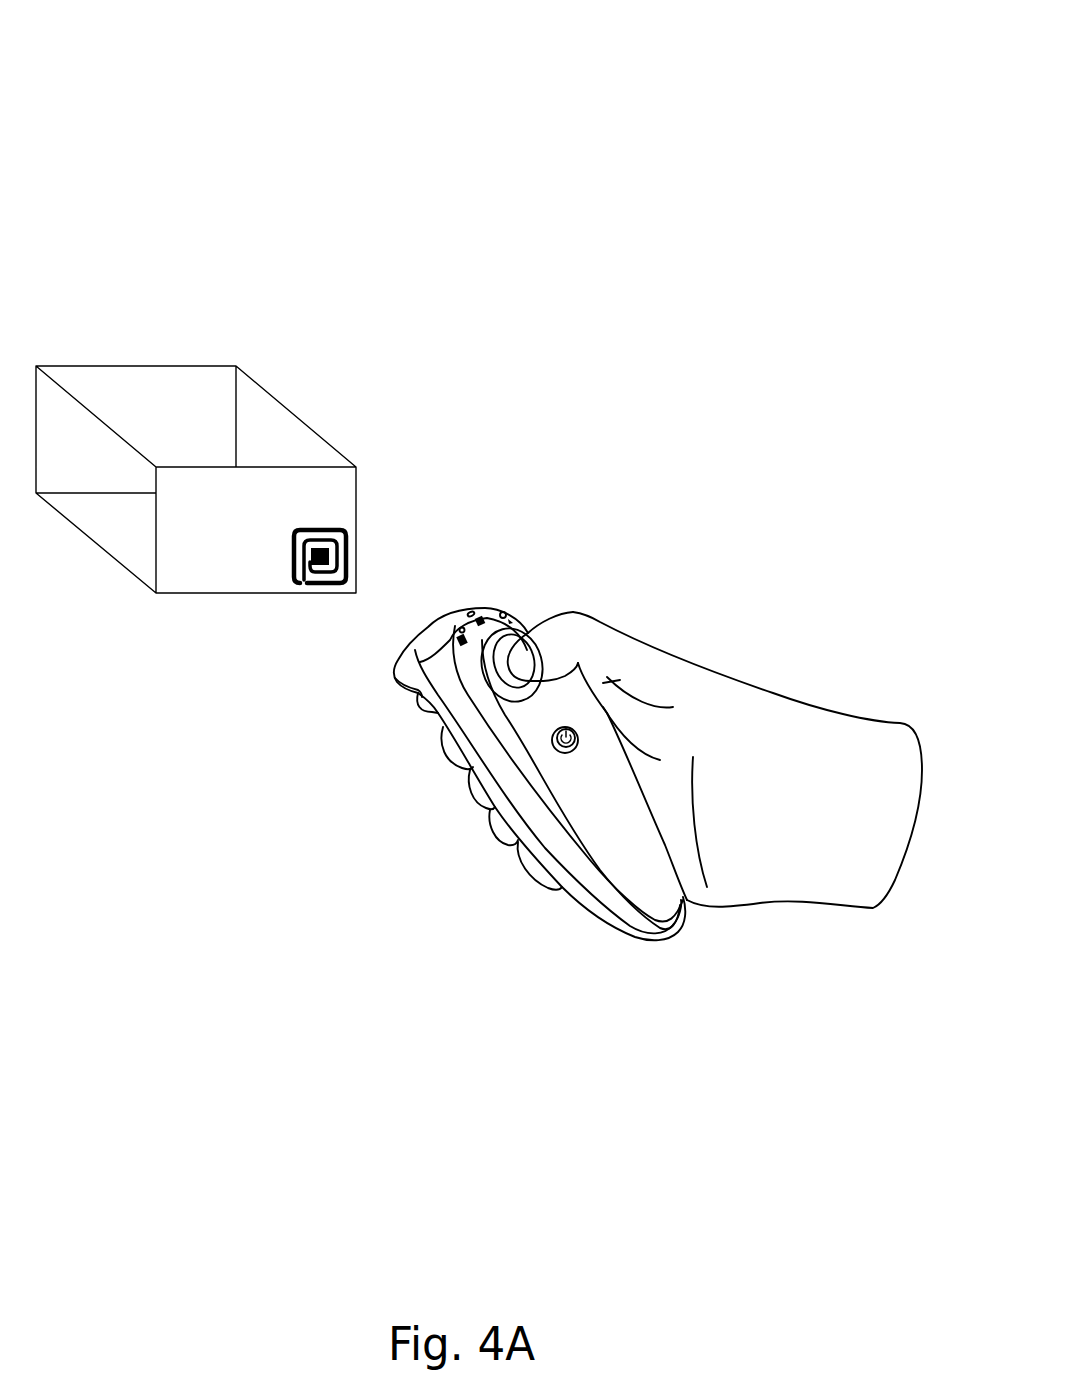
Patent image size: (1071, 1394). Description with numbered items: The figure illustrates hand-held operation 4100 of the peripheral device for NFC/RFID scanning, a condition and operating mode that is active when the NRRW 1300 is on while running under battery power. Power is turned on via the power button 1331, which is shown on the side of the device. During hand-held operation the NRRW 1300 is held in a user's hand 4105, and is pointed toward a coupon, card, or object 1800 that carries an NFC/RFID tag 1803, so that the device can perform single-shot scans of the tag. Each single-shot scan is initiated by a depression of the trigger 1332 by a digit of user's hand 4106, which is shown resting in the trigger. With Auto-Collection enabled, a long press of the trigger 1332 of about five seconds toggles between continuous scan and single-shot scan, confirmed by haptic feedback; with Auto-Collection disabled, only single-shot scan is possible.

The hand-held operation 4100 is at (650, 70).
The coupon, card, or object 1800 is at (218, 593).
The NFC/RFID tag 1803 is at (338, 530).
The NRRW 1300 is at (600, 778).
The trigger 1332 is at (522, 648).
The power button 1331 is at (565, 728).
The user's hand 4105 is at (677, 731).
The digit of user's hand 4106 is at (548, 635).